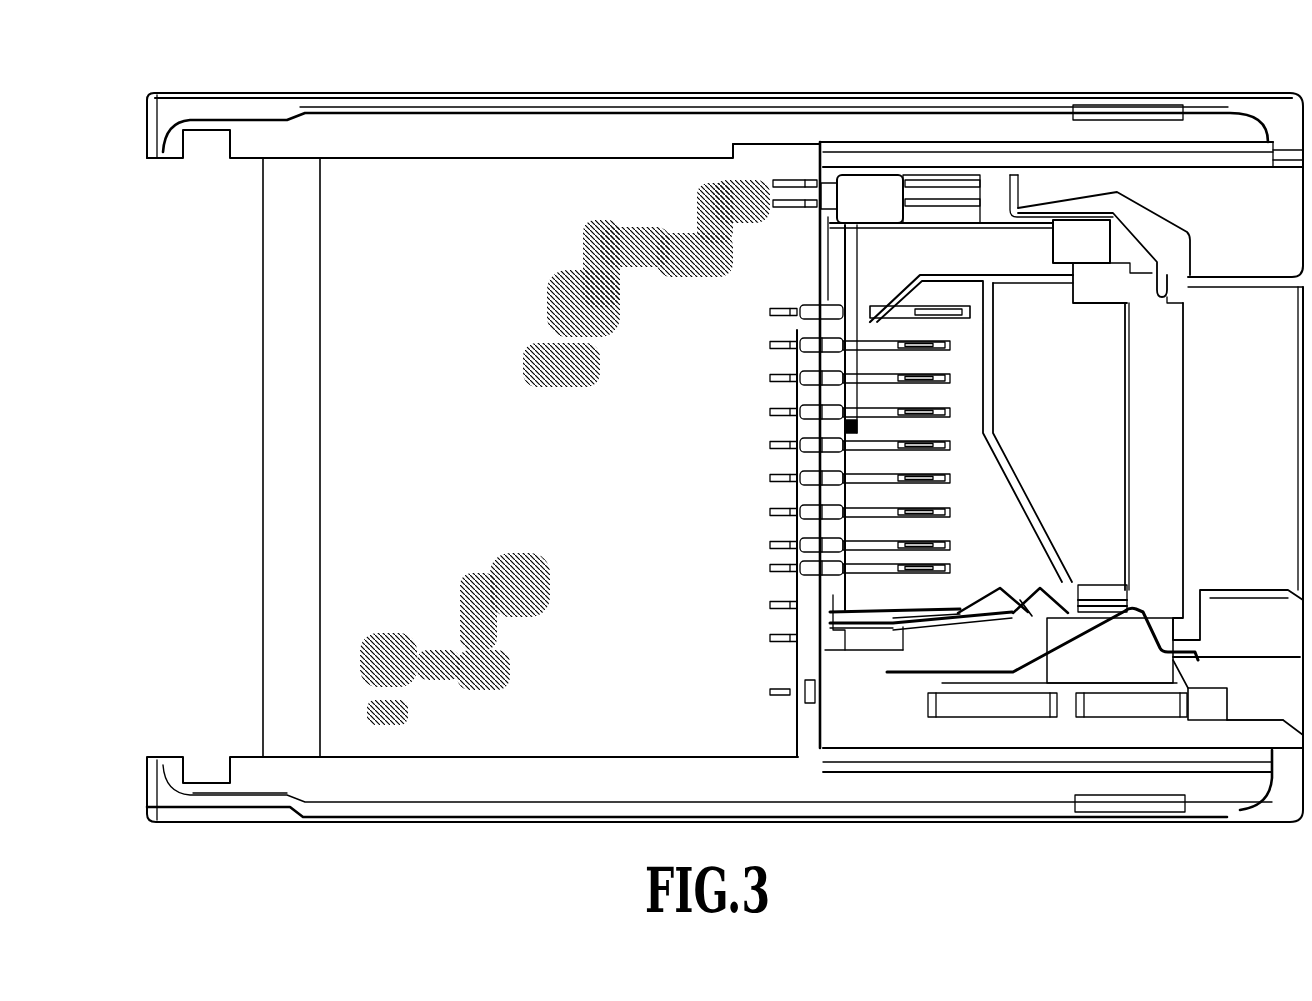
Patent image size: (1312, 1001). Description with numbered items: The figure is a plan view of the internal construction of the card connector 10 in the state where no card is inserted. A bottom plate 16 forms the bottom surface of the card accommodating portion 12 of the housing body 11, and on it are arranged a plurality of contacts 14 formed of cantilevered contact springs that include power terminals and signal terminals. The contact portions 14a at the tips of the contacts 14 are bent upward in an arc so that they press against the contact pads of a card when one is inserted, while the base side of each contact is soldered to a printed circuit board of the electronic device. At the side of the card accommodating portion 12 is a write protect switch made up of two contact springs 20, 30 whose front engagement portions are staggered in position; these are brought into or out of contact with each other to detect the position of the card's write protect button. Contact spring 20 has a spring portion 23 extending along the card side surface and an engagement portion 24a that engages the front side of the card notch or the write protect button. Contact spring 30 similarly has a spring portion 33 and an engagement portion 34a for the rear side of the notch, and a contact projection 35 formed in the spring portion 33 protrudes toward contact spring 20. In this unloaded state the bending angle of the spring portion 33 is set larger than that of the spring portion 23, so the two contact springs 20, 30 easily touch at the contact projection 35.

The connector 10 is at (770, 78).
The housing body 11 is at (927, 120).
The card accommodating portion 12 is at (1117, 412).
The contacts 14 is at (755, 313).
The contact portions 14a is at (935, 400).
The bottom plate 16 is at (970, 335).
The contact spring 20 is at (933, 609).
The spring portion 23 is at (900, 650).
The engagement portion 24a is at (1000, 588).
The contact spring 30 is at (1050, 640).
The spring portion 33 is at (950, 631).
The engagement portion 34a is at (1068, 588).
The contact projection 35 is at (960, 596).